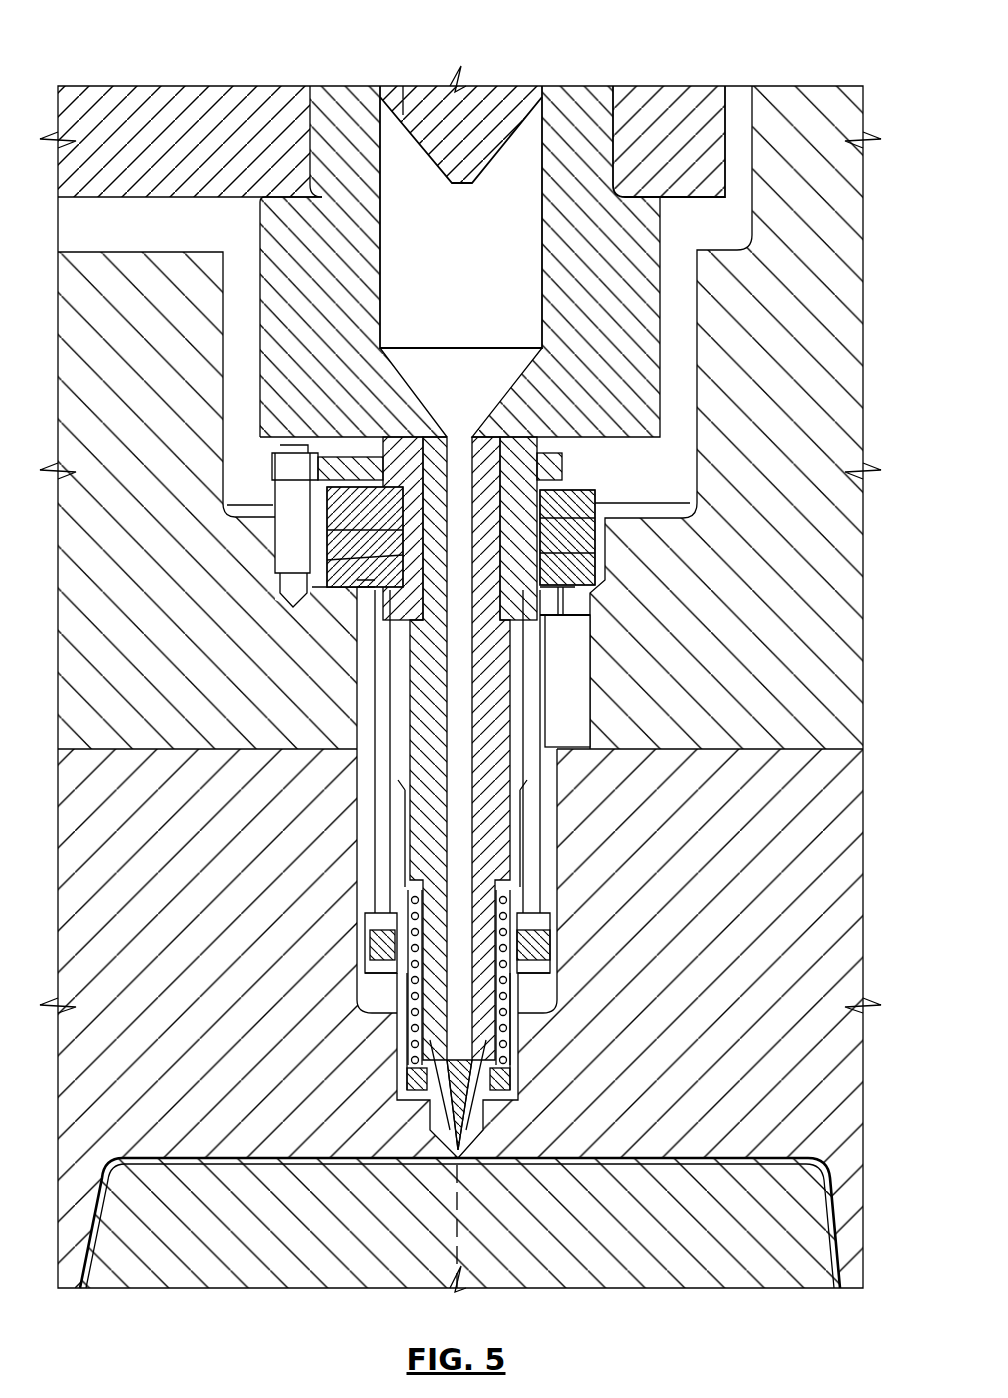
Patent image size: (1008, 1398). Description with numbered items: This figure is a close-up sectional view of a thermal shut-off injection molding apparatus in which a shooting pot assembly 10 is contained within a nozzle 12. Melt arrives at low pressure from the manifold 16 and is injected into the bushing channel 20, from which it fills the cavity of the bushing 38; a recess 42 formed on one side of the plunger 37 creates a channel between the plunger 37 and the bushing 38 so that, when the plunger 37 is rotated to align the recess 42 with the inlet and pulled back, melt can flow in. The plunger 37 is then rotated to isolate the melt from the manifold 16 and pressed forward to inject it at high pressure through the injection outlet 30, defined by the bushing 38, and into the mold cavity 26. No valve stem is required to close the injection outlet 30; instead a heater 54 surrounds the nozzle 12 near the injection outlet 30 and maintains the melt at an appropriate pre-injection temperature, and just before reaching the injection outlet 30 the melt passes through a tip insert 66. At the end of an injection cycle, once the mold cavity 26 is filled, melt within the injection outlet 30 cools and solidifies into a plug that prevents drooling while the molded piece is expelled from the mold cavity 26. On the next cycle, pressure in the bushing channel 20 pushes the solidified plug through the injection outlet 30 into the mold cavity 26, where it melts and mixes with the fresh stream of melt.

The shooting pot assembly 10 is at (545, 124).
The nozzle 12 is at (557, 863).
The manifold 16 is at (107, 190).
The bushing channel 20 is at (393, 272).
The mold cavity 26 is at (200, 1158).
The injection outlet 30 is at (473, 1163).
The plunger 37 is at (503, 113).
The bushing 38 is at (630, 297).
The recess 42 is at (378, 100).
The heater 54 is at (520, 937).
The tip insert 66 is at (420, 1100).